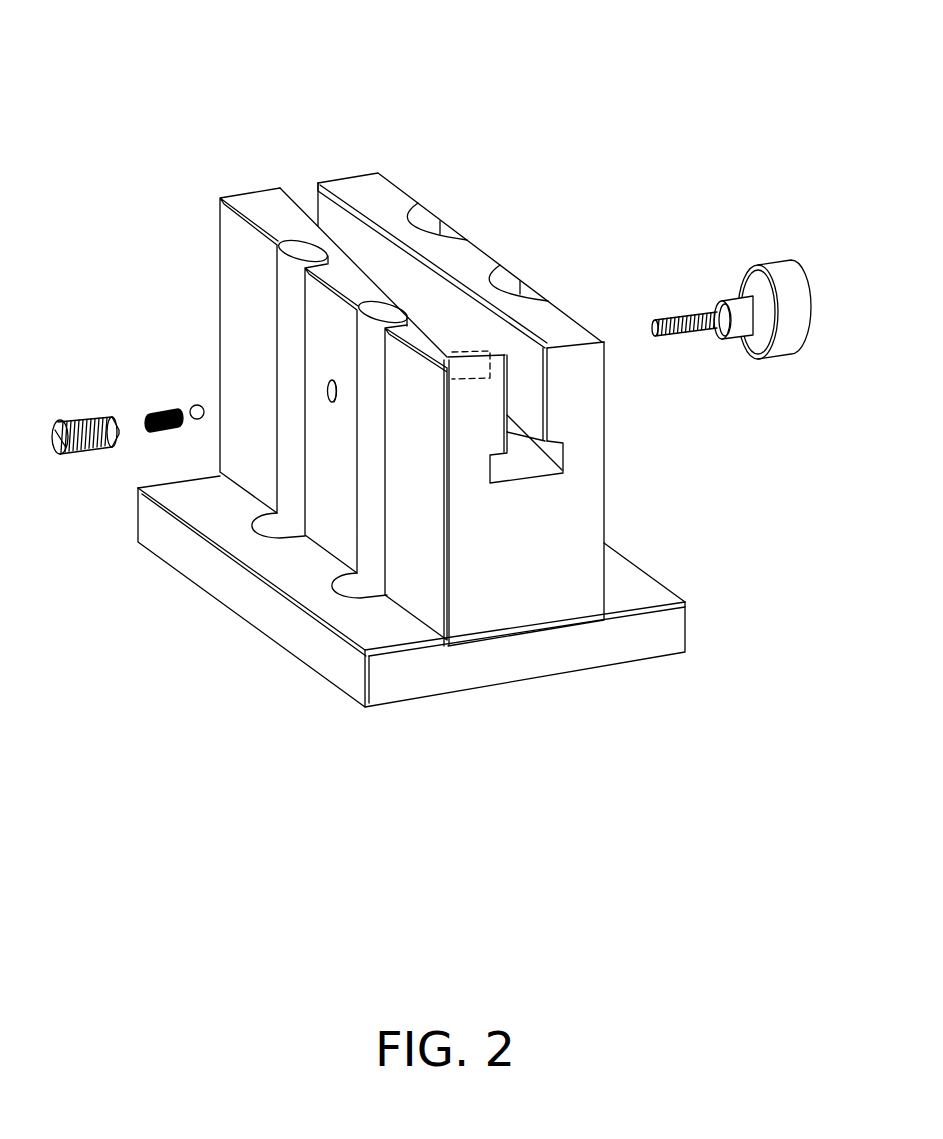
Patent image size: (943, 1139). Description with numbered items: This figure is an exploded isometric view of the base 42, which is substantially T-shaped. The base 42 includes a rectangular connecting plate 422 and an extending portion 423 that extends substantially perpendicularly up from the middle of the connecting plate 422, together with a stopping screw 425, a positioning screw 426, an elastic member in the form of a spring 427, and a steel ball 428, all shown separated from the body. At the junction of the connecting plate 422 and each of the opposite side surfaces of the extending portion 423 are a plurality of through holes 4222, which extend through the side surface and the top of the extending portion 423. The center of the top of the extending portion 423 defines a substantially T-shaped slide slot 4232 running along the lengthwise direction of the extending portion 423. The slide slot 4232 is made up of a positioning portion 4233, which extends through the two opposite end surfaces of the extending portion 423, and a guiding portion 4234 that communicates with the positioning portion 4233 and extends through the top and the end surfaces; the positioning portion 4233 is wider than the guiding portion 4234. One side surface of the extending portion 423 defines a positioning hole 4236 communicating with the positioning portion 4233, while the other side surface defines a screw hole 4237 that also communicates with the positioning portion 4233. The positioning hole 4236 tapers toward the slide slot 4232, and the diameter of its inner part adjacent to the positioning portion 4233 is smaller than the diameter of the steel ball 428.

The base 42 is at (468, 412).
The connecting plate 422 is at (411, 500).
The through holes 4222 is at (268, 527).
The extending portion 423 is at (558, 409).
The slide slot 4232 is at (644, 415).
The positioning portion 4233 is at (558, 458).
The guiding portion 4234 is at (525, 403).
The positioning hole 4236 is at (333, 403).
The screw hole 4237 is at (483, 356).
The stopping screw 425 is at (777, 275).
The positioning screw 426 is at (77, 416).
The spring 427 is at (158, 411).
The steel ball 428 is at (201, 404).